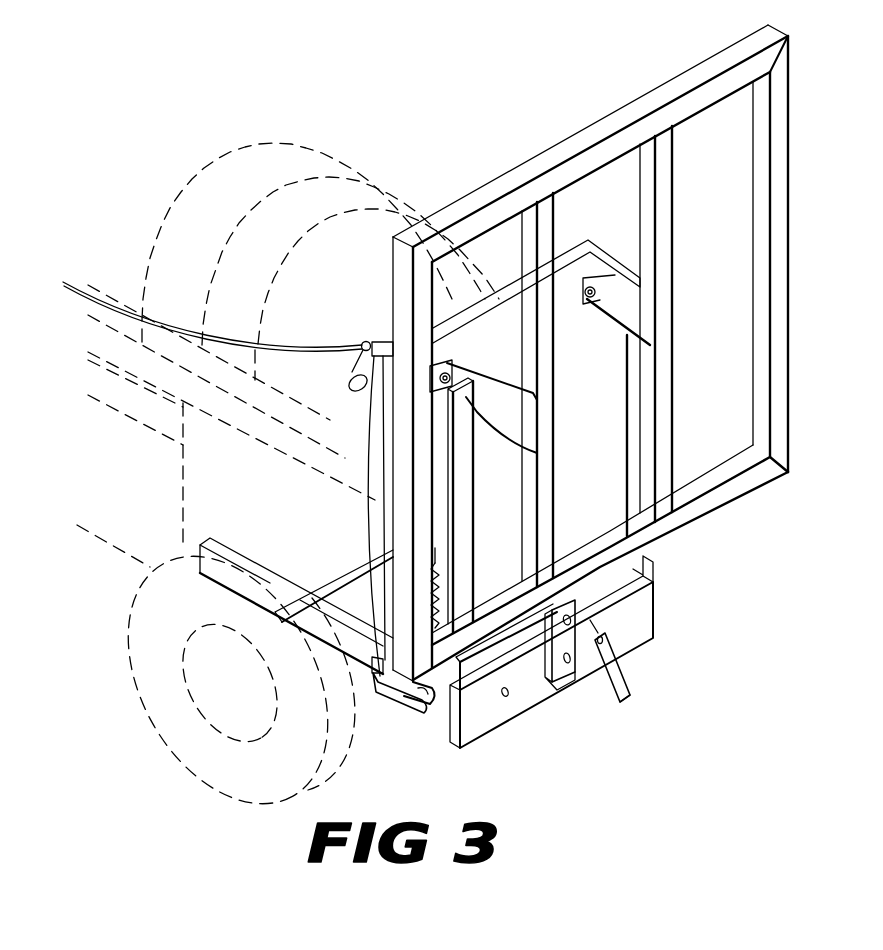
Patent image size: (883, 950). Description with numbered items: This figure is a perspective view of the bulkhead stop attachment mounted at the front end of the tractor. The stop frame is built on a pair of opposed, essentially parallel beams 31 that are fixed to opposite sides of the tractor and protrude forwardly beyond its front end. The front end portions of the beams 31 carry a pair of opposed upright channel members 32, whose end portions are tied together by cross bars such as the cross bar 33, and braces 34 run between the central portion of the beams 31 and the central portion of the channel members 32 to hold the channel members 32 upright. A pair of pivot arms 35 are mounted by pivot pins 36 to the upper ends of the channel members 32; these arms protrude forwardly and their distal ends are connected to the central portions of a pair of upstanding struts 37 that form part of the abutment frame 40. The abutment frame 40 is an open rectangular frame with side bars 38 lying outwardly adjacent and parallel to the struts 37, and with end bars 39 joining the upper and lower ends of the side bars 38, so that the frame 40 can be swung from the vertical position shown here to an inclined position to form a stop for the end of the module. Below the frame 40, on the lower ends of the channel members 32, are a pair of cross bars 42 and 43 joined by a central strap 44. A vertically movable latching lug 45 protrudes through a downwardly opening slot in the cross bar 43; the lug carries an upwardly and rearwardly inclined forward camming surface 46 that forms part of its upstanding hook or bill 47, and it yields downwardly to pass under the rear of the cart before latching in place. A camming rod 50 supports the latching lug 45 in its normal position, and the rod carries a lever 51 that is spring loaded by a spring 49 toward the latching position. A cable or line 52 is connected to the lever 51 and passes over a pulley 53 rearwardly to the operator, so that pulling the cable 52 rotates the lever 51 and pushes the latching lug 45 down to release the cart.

The beams 31 is at (357, 655).
The upright channel members 32 is at (463, 567).
The cross bar 33 is at (500, 293).
The braces 34 is at (332, 583).
The pivot arms 35 is at (613, 285).
The pivot pins 36 is at (432, 365).
The upstanding struts 37 is at (547, 227).
The side bars 38 is at (780, 210).
The end bars 39 is at (620, 130).
The abutment frame 40 is at (482, 158).
The cross bar 42 is at (637, 572).
The cross bar 43 is at (637, 627).
The central strap 44 is at (555, 686).
The latching lug 45 is at (600, 693).
The camming surface 46 is at (613, 665).
The hook or bill 47 is at (624, 700).
The spring 49 is at (438, 565).
The camming rod 50 is at (428, 706).
The lever 51 is at (398, 702).
The cable or line 52 is at (232, 343).
The pulley 53 is at (350, 383).